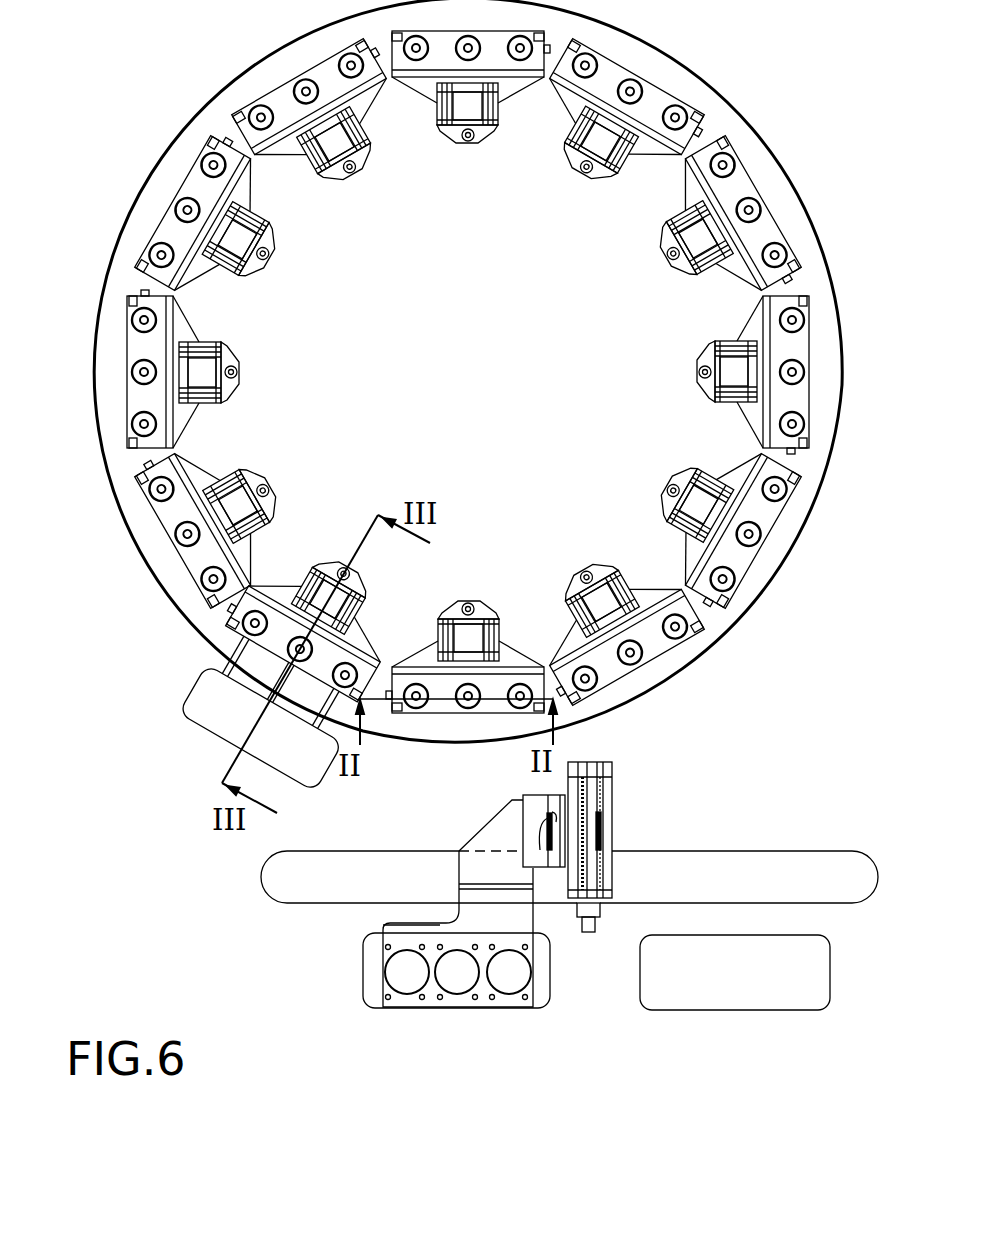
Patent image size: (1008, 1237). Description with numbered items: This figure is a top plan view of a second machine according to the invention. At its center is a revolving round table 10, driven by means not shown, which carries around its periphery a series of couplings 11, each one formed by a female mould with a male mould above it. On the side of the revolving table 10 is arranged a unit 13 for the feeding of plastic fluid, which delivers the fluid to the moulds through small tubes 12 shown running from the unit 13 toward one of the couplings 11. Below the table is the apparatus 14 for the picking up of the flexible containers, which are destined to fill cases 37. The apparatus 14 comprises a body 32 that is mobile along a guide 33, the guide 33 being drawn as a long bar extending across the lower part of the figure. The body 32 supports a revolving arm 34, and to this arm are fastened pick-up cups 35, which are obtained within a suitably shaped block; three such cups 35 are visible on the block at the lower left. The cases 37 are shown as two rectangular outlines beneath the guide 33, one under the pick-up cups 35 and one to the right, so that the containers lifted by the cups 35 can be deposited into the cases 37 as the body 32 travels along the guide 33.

The revolving round table 10 is at (533, 369).
The couplings 11 is at (153, 195).
The small tubes 12 is at (207, 657).
The unit for the feeding of plastic fluid 13 is at (245, 721).
The apparatus for the picking up of the flexible containers 14 is at (640, 797).
The body 32 is at (604, 837).
The guide 33 is at (262, 880).
The revolving arm 34 is at (505, 835).
The pick-up cups 35 is at (510, 975).
The cases 37 is at (372, 955).